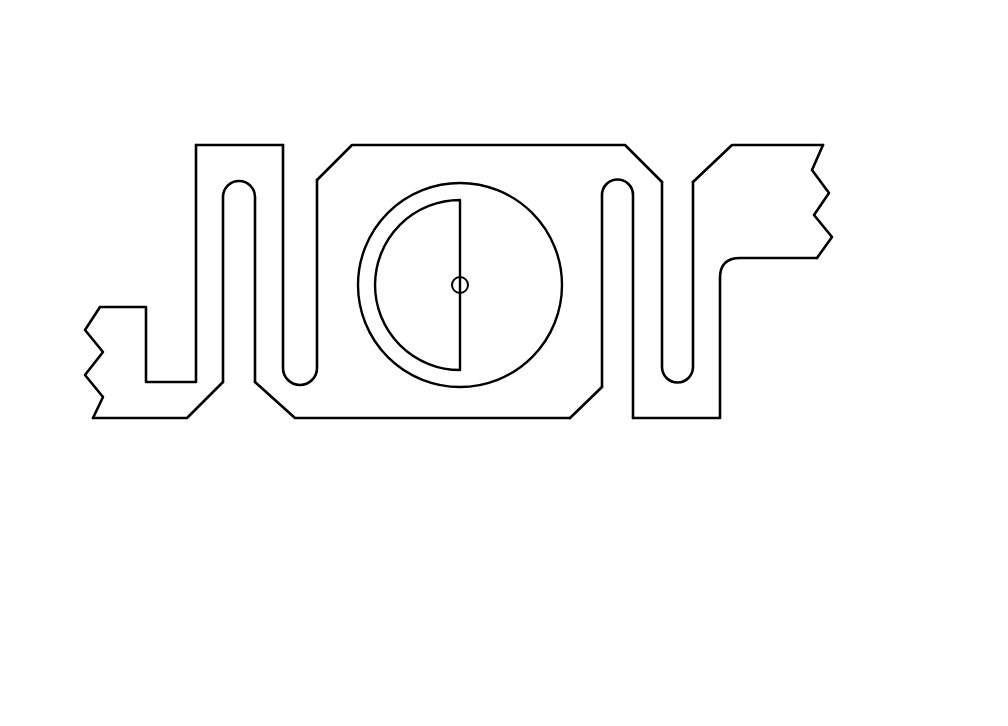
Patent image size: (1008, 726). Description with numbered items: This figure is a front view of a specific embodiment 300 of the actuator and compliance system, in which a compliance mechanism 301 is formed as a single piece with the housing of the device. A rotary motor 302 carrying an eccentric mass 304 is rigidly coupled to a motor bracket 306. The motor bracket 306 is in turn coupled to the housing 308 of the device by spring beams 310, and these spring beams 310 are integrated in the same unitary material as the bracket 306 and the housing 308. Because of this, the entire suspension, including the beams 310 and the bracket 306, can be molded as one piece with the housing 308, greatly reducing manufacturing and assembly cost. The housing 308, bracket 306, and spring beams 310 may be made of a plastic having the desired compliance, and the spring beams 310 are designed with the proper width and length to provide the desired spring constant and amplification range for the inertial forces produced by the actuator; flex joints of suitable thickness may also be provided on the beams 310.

The specific embodiment 300 is at (557, 55).
The compliance mechanism 301 is at (325, 145).
The rotary motor 302 is at (537, 301).
The eccentric mass 304 is at (434, 301).
The motor bracket 306 is at (572, 392).
The housing 308 is at (120, 363).
The spring beams 310 is at (277, 245).